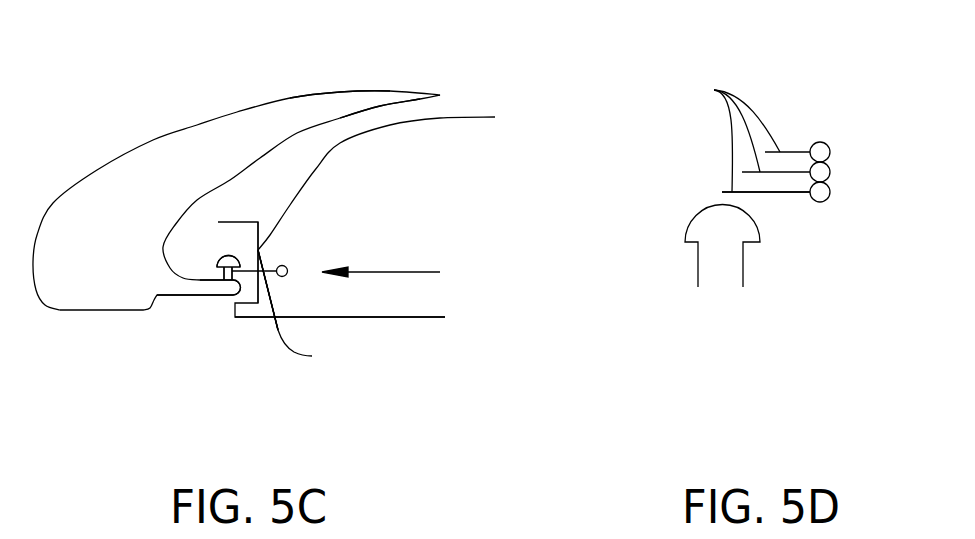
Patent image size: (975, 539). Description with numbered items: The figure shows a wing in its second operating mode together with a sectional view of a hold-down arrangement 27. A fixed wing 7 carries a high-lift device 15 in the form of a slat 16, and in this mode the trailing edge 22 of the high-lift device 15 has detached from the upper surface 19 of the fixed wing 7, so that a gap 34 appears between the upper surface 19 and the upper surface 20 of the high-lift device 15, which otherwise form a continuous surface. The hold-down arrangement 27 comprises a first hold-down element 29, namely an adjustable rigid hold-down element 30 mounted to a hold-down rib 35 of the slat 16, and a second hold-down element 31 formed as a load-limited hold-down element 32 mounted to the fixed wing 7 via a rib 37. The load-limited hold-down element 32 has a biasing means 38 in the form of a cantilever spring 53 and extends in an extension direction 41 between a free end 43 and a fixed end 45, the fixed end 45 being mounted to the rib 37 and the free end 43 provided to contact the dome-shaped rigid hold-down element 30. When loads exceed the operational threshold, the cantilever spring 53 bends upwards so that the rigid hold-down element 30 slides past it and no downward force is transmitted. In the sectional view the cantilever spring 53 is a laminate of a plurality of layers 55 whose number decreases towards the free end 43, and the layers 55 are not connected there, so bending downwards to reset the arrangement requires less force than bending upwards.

In FIG. 5C, the fixed wing 7 is at (443, 176).
In FIG. 5C, the high-lift device 15 is at (84, 277).
In FIG. 5C, the slat 16 is at (131, 277).
In FIG. 5C, the upper surface of the fixed wing 19 is at (495, 117).
In FIG. 5C, the upper surface of the high-lift device 20 is at (197, 125).
In FIG. 5C, the trailing edge 22 is at (371, 93).
In FIG. 5C, the hold-down arrangement 27 is at (290, 260).
In FIG. 5C, the first hold-down element 29 is at (226, 280).
In FIG. 5C, the rigid hold-down element 30 is at (228, 273).
In FIG. 5D, the rigid hold-down element 30 is at (722, 234).
In FIG. 5C, the second hold-down element 31 is at (351, 309).
In FIG. 5C, the load-limited hold-down element 32 is at (268, 290).
In FIG. 5C, the gap 34 is at (417, 111).
In FIG. 5C, the hold-down rib 35 is at (177, 282).
In FIG. 5C, the rib 37 is at (290, 245).
In FIG. 5C, the biasing means 38 is at (268, 290).
In FIG. 5C, the extension direction 41 is at (384, 271).
In FIG. 5C, the free end 43 is at (240, 254).
In FIG. 5D, the free end 43 is at (693, 195).
In FIG. 5C, the fixed end 45 is at (286, 267).
In FIG. 5D, the fixed end 45 is at (843, 172).
In FIG. 5C, the cantilever spring 53 is at (268, 290).
In FIG. 5D, the cantilever spring 53 is at (797, 150).
In FIG. 5D, the layers 55 is at (732, 135).